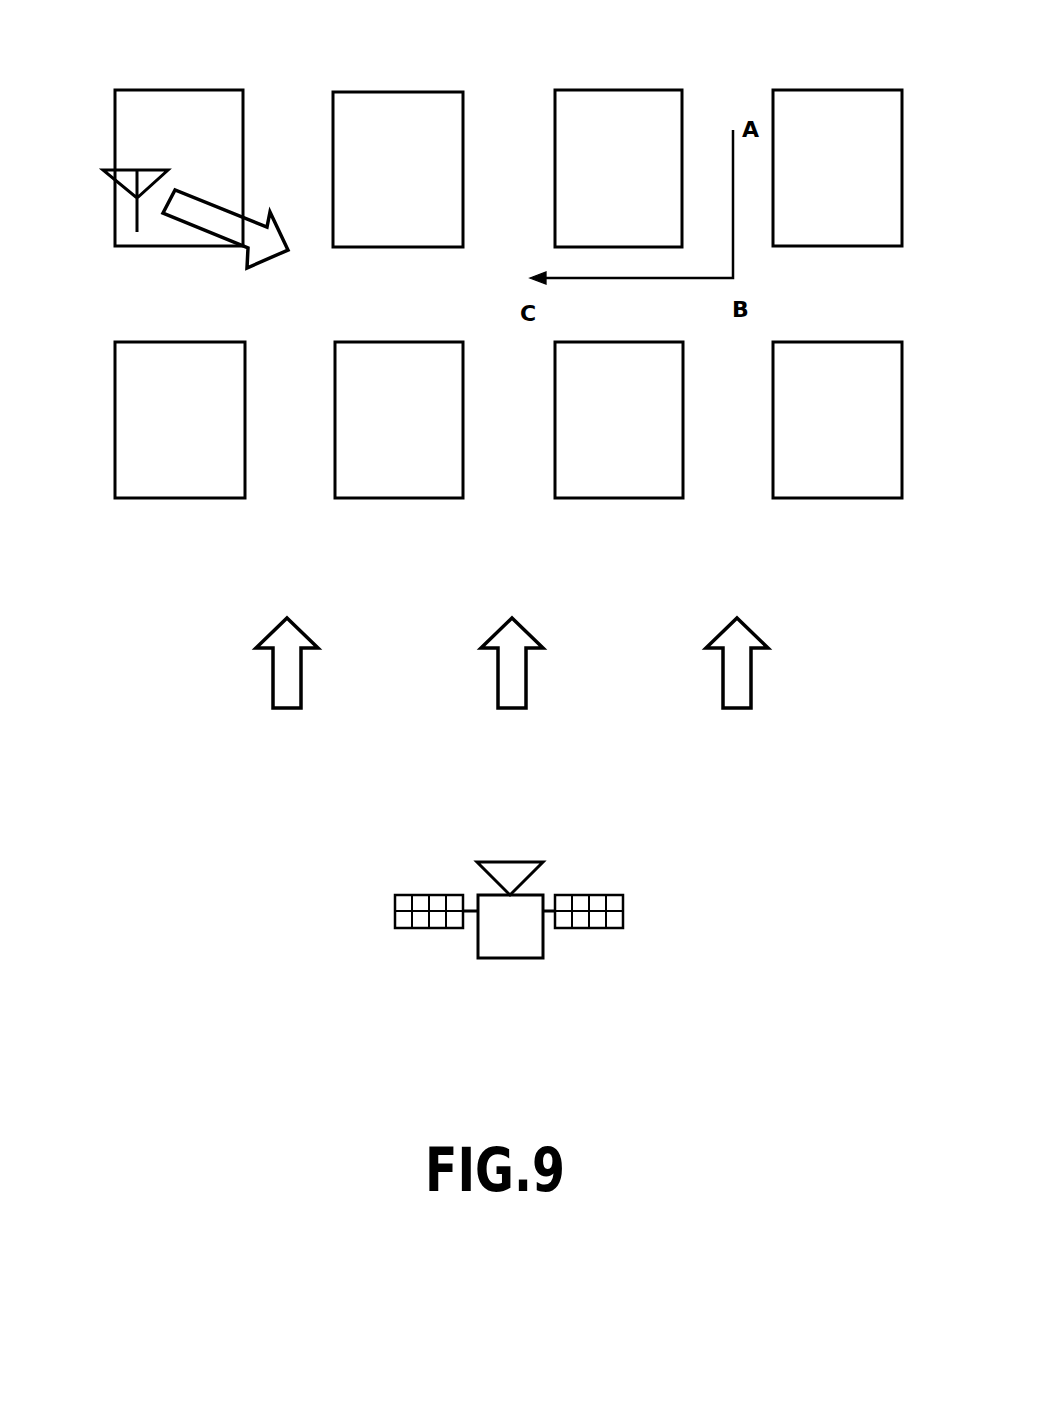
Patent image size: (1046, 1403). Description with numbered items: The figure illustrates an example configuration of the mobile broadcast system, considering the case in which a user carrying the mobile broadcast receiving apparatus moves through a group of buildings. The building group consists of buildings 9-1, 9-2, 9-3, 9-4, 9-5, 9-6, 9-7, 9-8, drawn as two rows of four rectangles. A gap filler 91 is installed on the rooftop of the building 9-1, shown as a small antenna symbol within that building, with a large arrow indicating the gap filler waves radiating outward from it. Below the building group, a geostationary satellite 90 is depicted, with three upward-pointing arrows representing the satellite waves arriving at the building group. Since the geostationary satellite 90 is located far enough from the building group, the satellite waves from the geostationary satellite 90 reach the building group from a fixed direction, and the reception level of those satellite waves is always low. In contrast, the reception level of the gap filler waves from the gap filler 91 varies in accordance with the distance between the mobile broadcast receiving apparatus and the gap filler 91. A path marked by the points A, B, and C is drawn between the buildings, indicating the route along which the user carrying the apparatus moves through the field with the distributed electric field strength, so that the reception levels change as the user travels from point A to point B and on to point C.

The building 9-1 is at (215, 90).
The building 9-2 is at (435, 92).
The building 9-3 is at (655, 90).
The building 9-4 is at (868, 90).
The building 9-5 is at (168, 342).
The building 9-6 is at (388, 342).
The building 9-7 is at (608, 342).
The building 9-8 is at (827, 342).
The gap filler 91 is at (122, 188).
The geostationary satellite 90 is at (542, 893).